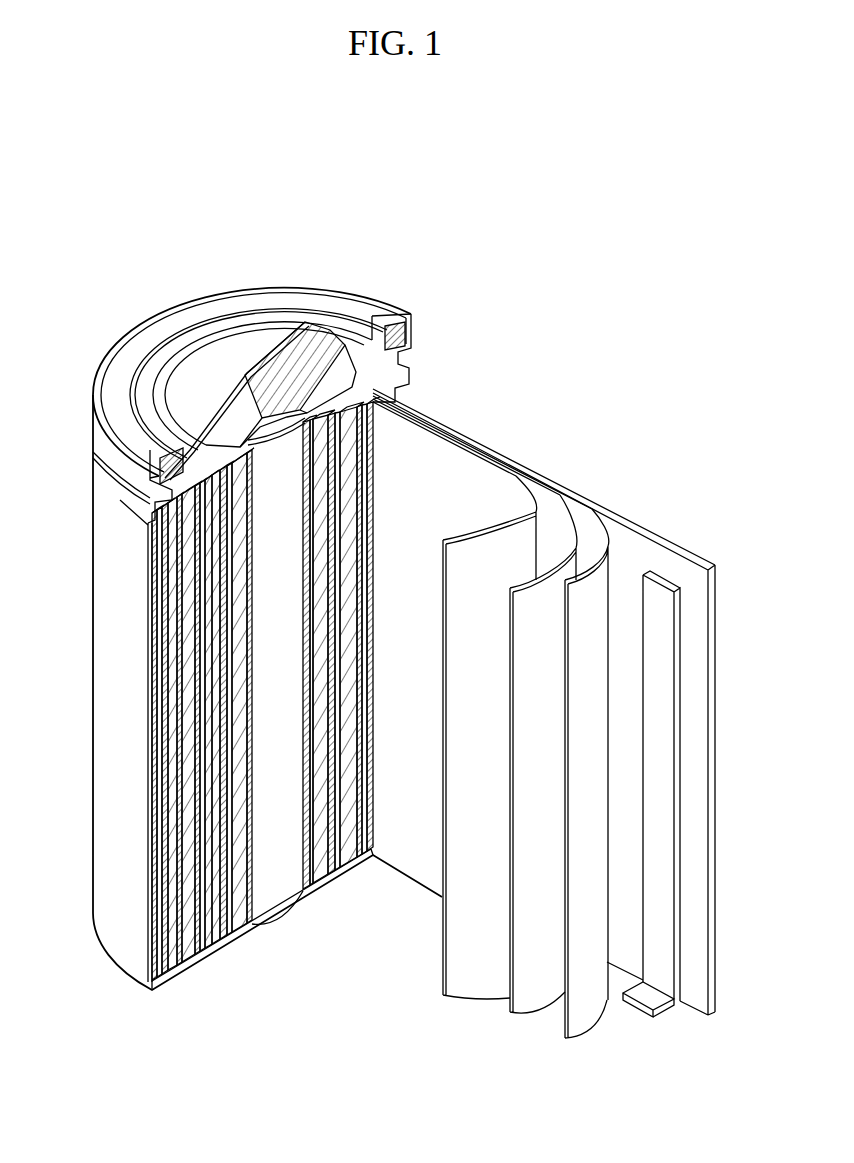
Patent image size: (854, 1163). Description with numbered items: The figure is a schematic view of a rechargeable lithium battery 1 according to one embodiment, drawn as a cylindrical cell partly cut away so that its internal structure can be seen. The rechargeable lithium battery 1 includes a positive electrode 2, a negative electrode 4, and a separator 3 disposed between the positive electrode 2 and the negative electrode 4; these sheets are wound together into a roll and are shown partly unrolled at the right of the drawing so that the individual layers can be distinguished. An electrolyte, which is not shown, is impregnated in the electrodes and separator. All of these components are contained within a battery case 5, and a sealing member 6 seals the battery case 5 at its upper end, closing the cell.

The secondary battery 1 is at (508, 300).
The electrode assembly / electrode sheet 2 is at (668, 556).
The electrode plate 3 is at (497, 495).
The separator 4 is at (547, 522).
The case (can) 5 is at (110, 749).
The cap assembly 6 is at (248, 322).